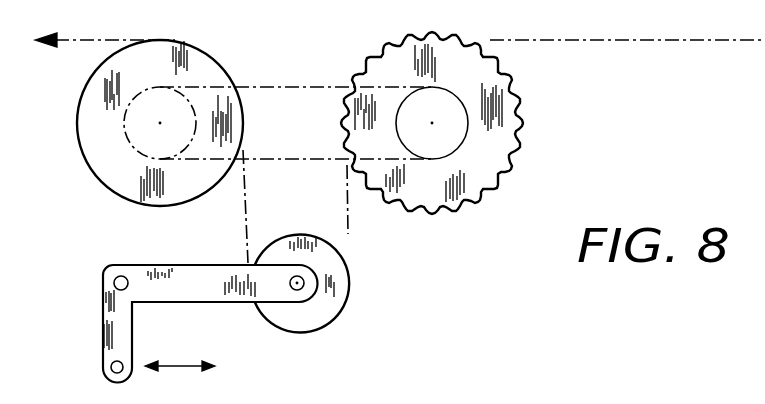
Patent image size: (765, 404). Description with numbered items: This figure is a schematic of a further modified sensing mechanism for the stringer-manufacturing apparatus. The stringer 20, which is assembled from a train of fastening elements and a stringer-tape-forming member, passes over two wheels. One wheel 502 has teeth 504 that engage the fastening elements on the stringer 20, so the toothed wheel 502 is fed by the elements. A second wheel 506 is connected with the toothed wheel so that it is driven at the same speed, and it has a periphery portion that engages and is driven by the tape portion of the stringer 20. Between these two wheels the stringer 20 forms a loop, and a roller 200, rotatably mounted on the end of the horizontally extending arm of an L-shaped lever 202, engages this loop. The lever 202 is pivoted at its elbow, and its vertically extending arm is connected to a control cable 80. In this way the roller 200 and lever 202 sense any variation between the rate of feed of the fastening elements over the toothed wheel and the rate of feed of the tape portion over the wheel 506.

The stringer 20 is at (492, 40).
The wheel 506 is at (197, 68).
The teeth 504 is at (527, 97).
The wheel 502 is at (472, 177).
The roller 200 is at (333, 297).
The L-shaped lever 202 is at (198, 283).
The control cable 80 is at (137, 368).